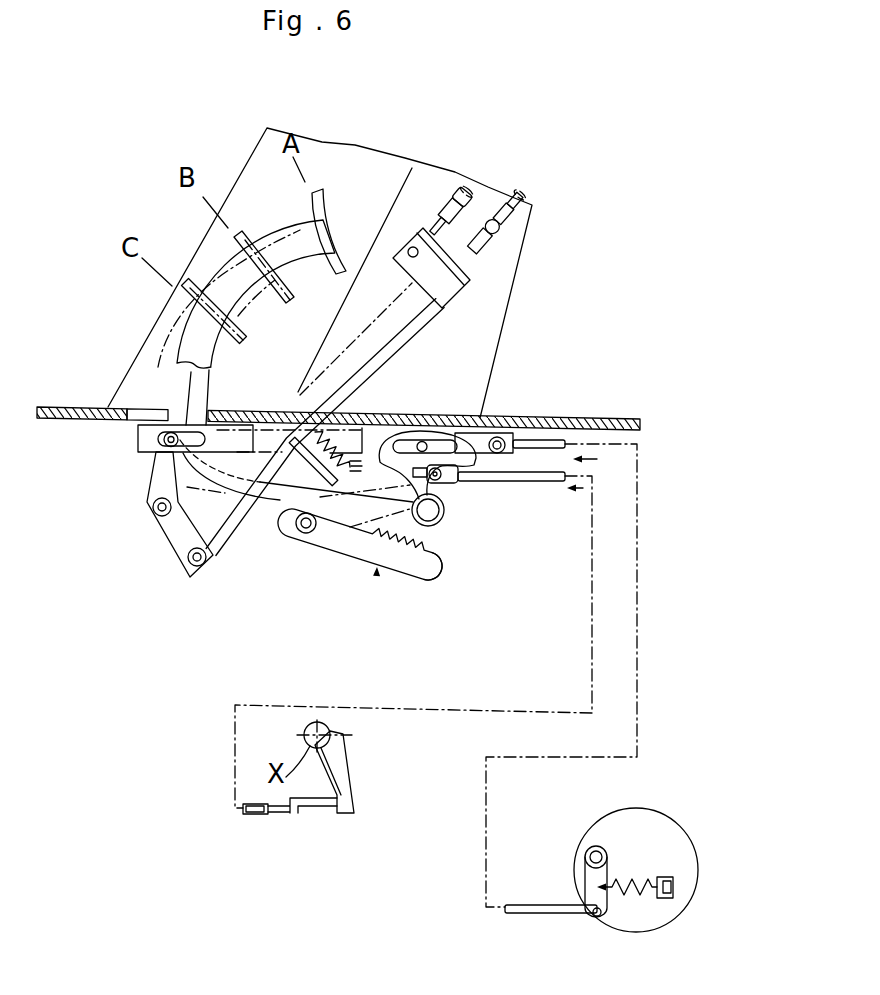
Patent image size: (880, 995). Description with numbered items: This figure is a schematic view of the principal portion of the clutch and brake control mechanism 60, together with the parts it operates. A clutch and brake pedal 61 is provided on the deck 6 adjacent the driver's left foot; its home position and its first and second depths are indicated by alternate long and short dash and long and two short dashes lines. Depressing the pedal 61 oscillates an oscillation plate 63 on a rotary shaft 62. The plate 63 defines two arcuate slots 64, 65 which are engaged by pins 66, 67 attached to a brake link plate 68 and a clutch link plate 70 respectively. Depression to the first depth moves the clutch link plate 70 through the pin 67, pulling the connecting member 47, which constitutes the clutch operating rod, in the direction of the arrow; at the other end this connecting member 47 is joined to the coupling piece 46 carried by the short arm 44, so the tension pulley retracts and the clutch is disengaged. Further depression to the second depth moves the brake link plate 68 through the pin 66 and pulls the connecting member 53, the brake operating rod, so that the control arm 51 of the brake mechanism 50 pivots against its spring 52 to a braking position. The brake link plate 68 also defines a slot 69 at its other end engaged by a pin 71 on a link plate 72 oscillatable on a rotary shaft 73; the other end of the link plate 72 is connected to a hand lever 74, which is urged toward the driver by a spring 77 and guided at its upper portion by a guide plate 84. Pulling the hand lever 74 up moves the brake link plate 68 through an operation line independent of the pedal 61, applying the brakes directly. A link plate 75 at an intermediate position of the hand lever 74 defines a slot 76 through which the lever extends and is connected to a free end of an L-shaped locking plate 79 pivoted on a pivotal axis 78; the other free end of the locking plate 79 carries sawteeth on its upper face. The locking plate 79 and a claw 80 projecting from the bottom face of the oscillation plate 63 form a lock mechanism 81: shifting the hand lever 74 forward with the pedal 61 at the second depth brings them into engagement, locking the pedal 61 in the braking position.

The deck 6 is at (593, 417).
The short arm 44 is at (347, 795).
The coupling piece 46 is at (318, 810).
The connecting member 47 is at (545, 487).
The brake mechanism 50 is at (616, 826).
The control arm 51 is at (590, 875).
The spring 52 is at (633, 880).
The connecting member 53 is at (560, 440).
The clutch and brake control mechanism 60 is at (552, 234).
The clutch and brake pedal 61 is at (342, 227).
The rotary shaft 62 is at (432, 517).
The oscillation plate 63 is at (448, 446).
The arcuate slot 64 is at (463, 442).
The arcuate slot 65 is at (437, 478).
The pin 66 is at (422, 441).
The pin 67 is at (460, 482).
The brake link plate 68 is at (500, 432).
The slot 69 is at (199, 434).
The clutch link plate 70 is at (458, 478).
The pin 71 is at (160, 460).
The link plate 72 is at (172, 533).
The rotary shaft 73 is at (157, 512).
The hand lever 74 is at (418, 324).
The link plate 75 is at (270, 505).
The slot 76 is at (303, 430).
The spring 77 is at (350, 427).
The pivotal axis 78 is at (303, 532).
The locking plate 79 is at (338, 545).
The claw 80 is at (426, 570).
The lock mechanism 81 is at (377, 573).
The guide plate 84 is at (470, 275).